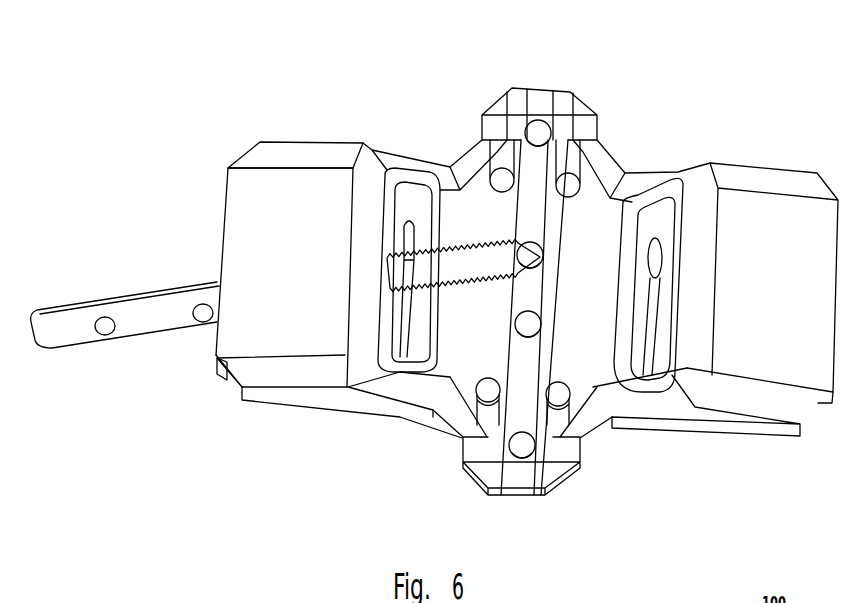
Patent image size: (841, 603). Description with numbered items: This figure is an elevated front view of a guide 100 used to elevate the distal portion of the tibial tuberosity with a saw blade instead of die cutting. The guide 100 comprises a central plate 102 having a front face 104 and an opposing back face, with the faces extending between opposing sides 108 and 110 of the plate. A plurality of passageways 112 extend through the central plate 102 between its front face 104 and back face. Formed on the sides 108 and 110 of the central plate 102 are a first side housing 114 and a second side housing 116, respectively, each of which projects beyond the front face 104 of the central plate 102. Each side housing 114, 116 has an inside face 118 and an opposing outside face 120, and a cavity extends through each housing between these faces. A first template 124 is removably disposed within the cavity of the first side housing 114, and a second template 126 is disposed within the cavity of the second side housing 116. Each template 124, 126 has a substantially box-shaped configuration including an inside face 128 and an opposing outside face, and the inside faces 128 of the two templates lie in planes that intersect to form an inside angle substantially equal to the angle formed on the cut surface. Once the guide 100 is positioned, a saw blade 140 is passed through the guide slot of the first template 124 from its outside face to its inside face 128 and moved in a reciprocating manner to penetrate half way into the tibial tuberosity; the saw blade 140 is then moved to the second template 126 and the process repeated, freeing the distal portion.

The guide 100 is at (717, 147).
The central plate 102 is at (543, 95).
The front face 104 is at (597, 118).
The side 108 is at (398, 372).
The side 110 is at (613, 345).
The passageways 112 is at (523, 450).
The first side housing 114 is at (272, 342).
The second side housing 116 is at (773, 370).
The inside face 118 is at (373, 158).
The outside face 120 is at (222, 189).
The first template 124 is at (430, 368).
The second template 126 is at (665, 345).
The inside face 128 is at (392, 345).
The saw blade 140 is at (143, 325).